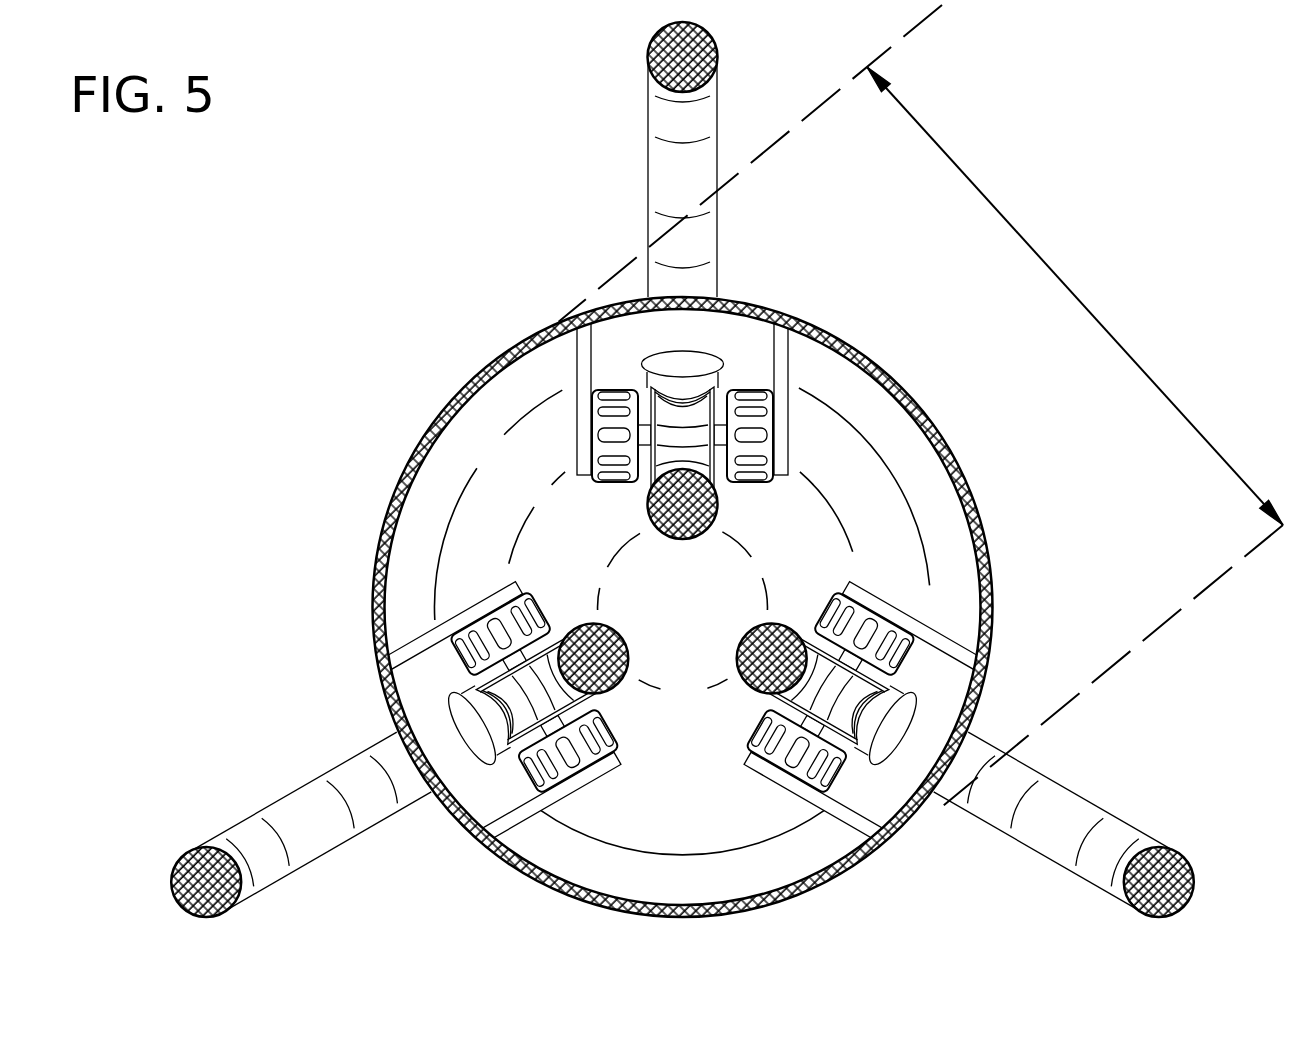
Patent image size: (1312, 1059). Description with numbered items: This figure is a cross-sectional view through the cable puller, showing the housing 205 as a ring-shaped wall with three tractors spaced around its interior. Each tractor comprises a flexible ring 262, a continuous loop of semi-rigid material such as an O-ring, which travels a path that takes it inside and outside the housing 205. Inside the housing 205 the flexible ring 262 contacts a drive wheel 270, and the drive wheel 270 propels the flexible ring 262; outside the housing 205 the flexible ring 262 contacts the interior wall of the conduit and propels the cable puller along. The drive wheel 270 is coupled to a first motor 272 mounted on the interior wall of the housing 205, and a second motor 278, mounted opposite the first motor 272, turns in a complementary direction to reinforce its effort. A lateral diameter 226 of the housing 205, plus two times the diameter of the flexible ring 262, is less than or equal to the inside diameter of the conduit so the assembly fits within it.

The housing 205 is at (915, 400).
The lateral diameter 226 is at (1085, 305).
The flexible ring 262 is at (655, 166).
The drive wheel 270 is at (684, 413).
The first motor 272 is at (771, 413).
The second motor 278 is at (596, 411).